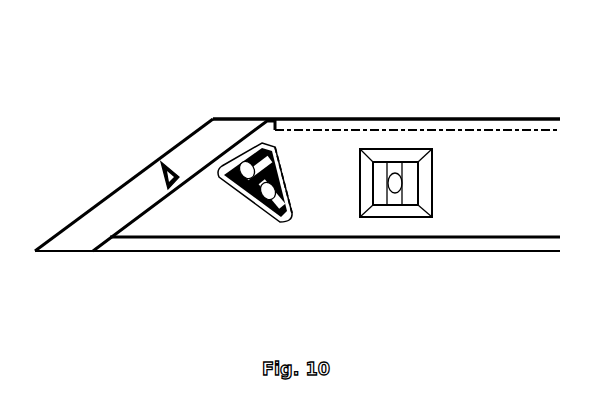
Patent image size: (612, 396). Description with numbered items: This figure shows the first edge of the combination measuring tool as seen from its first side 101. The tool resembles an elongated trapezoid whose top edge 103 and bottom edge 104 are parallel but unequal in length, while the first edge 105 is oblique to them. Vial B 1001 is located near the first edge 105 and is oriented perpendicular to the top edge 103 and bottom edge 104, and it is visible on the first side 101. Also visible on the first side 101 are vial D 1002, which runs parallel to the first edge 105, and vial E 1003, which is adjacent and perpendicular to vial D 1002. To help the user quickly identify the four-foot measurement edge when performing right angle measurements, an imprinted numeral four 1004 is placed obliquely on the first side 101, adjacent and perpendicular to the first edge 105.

The first side 101 is at (189, 263).
The top edge 103 is at (471, 108).
The bottom edge 104 is at (483, 258).
The first edge 105 is at (117, 168).
The vial B 1001 is at (388, 155).
The vial D 1002 is at (248, 148).
The vial E 1003 is at (282, 160).
The numeral "4" 1004 is at (159, 158).